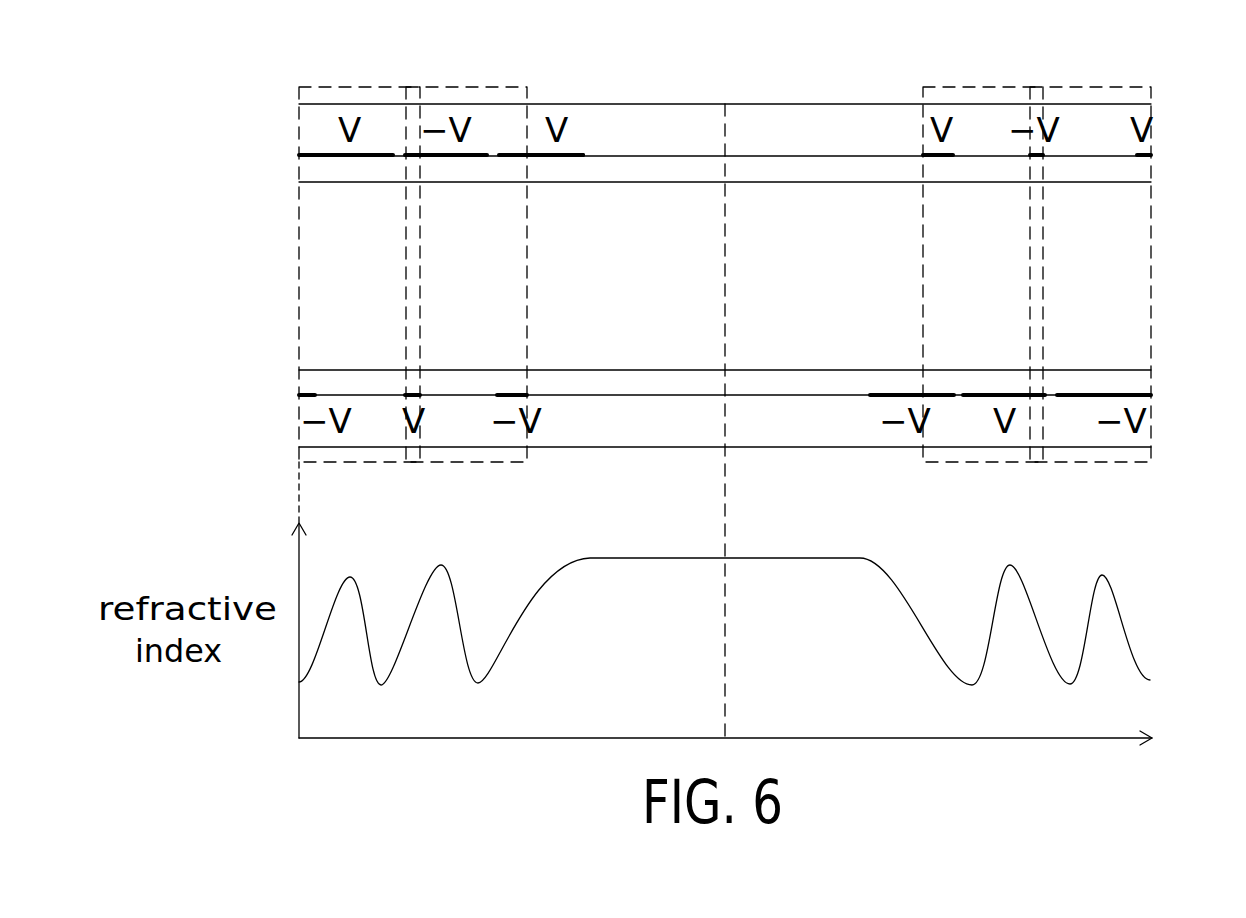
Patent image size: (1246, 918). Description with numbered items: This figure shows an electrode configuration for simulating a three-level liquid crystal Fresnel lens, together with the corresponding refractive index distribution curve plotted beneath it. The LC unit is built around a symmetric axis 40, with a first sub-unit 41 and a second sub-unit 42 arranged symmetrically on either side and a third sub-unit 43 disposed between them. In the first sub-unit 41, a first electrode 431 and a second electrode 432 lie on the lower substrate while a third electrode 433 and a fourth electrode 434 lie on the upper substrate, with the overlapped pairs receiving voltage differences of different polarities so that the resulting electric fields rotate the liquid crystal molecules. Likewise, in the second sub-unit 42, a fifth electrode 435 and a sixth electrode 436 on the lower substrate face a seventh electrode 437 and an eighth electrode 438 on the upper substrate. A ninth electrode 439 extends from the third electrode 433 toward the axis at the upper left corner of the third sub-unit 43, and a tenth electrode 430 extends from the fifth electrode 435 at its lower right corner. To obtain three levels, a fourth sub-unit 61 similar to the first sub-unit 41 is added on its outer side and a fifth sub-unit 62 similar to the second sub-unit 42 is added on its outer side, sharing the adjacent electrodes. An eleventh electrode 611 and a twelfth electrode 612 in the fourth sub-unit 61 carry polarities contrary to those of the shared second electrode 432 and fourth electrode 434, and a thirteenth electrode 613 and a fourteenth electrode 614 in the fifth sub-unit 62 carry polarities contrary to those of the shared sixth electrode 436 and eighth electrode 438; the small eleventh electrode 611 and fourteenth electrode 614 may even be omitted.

The symmetric axis 40 is at (725, 133).
The third sub-unit 43 is at (762, 104).
The first sub-unit 41 is at (477, 87).
The second sub-unit 42 is at (997, 87).
The fourth sub-unit 61 is at (350, 87).
The fifth sub-unit 62 is at (1123, 87).
The tenth electrode 430 is at (873, 397).
The first electrode 431 is at (510, 393).
The second electrode 432 is at (410, 393).
The third electrode 433 is at (513, 157).
The fourth electrode 434 is at (452, 157).
The fifth electrode 435 is at (937, 393).
The sixth electrode 436 is at (1005, 393).
The seventh electrode 437 is at (937, 157).
The eighth electrode 438 is at (1037, 157).
The ninth electrode 439 is at (573, 153).
The eleventh electrode 611 is at (305, 393).
The twelfth electrode 612 is at (332, 153).
The thirteenth electrode 613 is at (1140, 393).
The fourteenth electrode 614 is at (1140, 157).